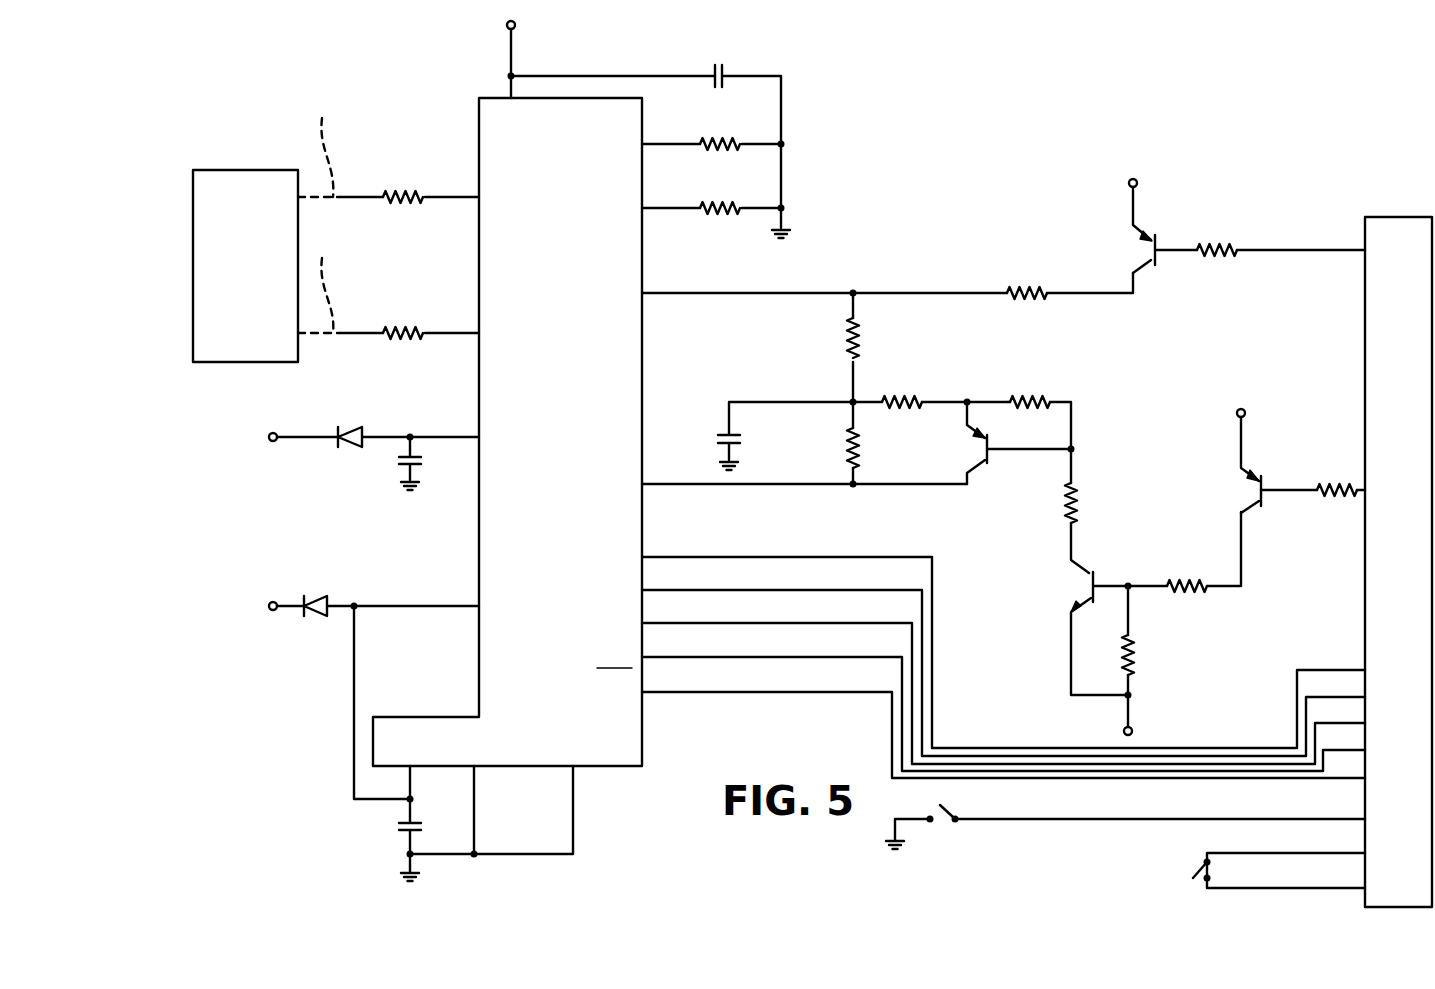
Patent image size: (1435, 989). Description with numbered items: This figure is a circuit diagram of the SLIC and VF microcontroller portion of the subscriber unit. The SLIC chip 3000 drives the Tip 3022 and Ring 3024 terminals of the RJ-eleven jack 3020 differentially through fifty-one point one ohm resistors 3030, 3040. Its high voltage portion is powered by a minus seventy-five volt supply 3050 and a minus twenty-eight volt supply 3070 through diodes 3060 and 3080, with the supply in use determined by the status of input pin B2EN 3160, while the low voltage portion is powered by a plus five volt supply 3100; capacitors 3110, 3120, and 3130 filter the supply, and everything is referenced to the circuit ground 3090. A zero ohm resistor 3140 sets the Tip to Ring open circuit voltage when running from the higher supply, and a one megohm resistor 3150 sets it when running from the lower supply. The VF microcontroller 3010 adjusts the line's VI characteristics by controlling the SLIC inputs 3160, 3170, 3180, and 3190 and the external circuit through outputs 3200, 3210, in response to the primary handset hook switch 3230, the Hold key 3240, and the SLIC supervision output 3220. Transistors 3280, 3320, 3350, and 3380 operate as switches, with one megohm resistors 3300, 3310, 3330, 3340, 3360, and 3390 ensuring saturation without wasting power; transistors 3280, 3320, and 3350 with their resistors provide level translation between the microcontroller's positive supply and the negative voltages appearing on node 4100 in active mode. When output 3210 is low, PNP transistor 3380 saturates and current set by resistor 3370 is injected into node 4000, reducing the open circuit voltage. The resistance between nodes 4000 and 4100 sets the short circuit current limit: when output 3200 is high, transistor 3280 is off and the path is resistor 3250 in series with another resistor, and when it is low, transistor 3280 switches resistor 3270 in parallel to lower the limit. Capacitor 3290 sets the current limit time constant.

The SLIC chip 3000 is at (600, 396).
The VF microcontroller 3010 is at (1393, 217).
The RJ-11 jack 3020 is at (242, 170).
The Tip terminal 3022 is at (332, 143).
The Ring terminal 3024 is at (339, 279).
The 51.1 ohm resistor 3030 is at (380, 195).
The 51.1 ohm resistor 3040 is at (380, 331).
The -75 Vdc supply 3050 is at (272, 442).
The diode 3060 is at (352, 427).
The -28 Vdc supply 3070 is at (272, 611).
The diode 3080 is at (319, 596).
The circuit ground 3090 is at (418, 874).
The +5 Vdc supply 3100 is at (515, 26).
The capacitor 3110 is at (398, 463).
The capacitor 3120 is at (398, 828).
The capacitor 3130 is at (725, 65).
The 0 ohm resistor 3140 is at (737, 146).
The 1 Meg ohm resistor 3150 is at (718, 214).
The B2EN input pin 3160 is at (842, 556).
The SLIC control input 3170 is at (842, 589).
The SLIC control input 3180 is at (842, 622).
The SLIC control input 3190 is at (842, 656).
The VF microcontroller output 3200 is at (846, 453).
The VF microcontroller output 3210 is at (1287, 252).
The SLIC supervision output 3220 is at (842, 691).
The primary handset hook switch 3230 is at (947, 828).
The Hold key 3240 is at (1194, 872).
The resistor 3250 is at (846, 348).
The resistor 3270 is at (918, 400).
The transistor 3280 is at (990, 446).
The capacitor 3290 is at (722, 434).
The 1 Meg ohm resistor 3300 is at (1045, 397).
The 1 Meg ohm resistor 3310 is at (1074, 484).
The transistor 3320 is at (1085, 590).
The 1 Meg ohm resistor 3330 is at (1134, 672).
The 1 Meg ohm resistor 3340 is at (1159, 582).
The transistor 3350 is at (1256, 498).
The 1 Meg ohm resistor 3360 is at (1312, 480).
The resistor 3370 is at (1005, 292).
The PNP transistor 3380 is at (1150, 260).
The 1 Meg ohm resistor 3390 is at (1194, 248).
The node 4000 is at (853, 293).
The node 4100 is at (853, 484).